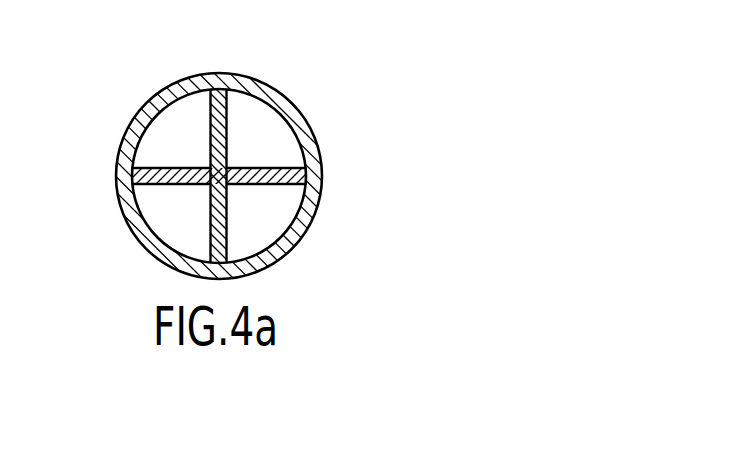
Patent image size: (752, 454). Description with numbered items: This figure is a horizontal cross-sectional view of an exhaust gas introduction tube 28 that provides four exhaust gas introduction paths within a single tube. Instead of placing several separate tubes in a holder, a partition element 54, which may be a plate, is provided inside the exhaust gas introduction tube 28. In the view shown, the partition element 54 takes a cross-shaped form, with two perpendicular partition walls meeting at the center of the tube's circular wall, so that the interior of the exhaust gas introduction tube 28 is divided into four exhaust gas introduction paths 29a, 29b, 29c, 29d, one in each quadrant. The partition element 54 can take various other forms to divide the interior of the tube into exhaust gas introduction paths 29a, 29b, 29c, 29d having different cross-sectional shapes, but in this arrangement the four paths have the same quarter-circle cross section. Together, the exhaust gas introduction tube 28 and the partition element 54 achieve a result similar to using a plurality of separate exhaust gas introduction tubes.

The exhaust gas introduction tube 28 is at (280, 90).
The exhaust gas introduction path 29a is at (251, 109).
The exhaust gas introduction path 29b is at (273, 212).
The exhaust gas introduction path 29c is at (173, 215).
The exhaust gas introduction path 29d is at (182, 128).
The partition element 54 is at (254, 165).